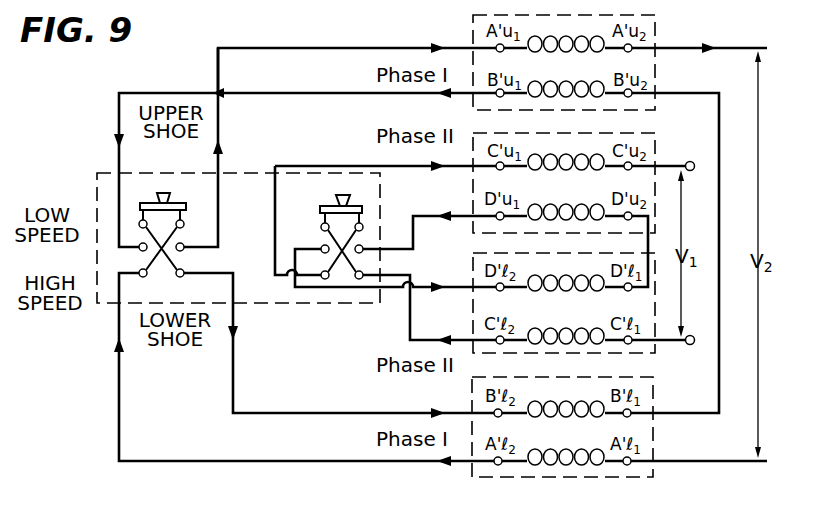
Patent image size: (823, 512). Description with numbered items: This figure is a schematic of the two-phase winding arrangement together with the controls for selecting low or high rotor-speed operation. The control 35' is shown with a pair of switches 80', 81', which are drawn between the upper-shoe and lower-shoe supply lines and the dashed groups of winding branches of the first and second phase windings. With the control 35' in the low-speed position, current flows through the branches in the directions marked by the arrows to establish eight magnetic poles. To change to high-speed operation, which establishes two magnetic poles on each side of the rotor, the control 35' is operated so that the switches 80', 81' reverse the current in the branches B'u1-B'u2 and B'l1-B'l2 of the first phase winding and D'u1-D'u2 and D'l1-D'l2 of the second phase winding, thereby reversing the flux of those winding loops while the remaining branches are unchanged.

The control 35' is at (211, 219).
The switch 80' is at (172, 208).
The switch 81' is at (348, 212).